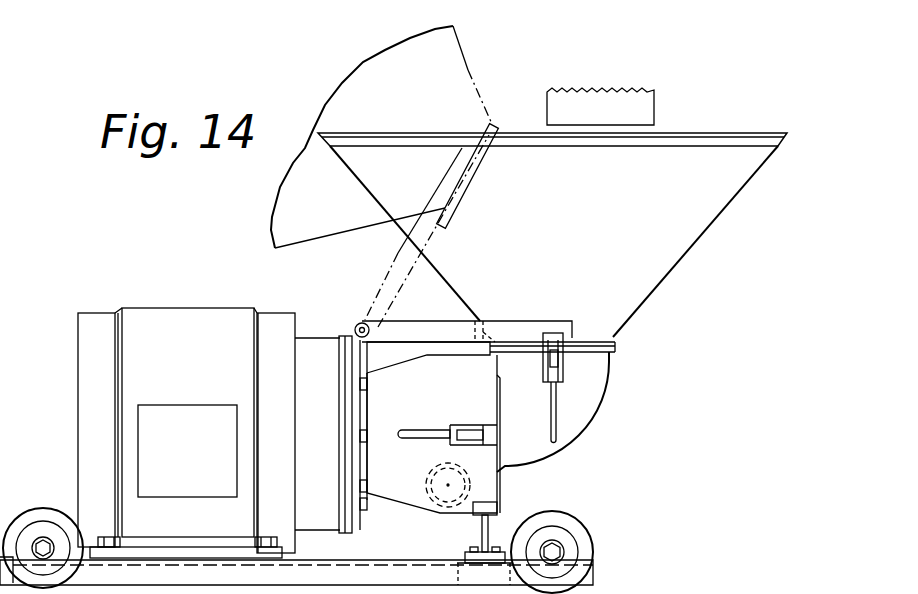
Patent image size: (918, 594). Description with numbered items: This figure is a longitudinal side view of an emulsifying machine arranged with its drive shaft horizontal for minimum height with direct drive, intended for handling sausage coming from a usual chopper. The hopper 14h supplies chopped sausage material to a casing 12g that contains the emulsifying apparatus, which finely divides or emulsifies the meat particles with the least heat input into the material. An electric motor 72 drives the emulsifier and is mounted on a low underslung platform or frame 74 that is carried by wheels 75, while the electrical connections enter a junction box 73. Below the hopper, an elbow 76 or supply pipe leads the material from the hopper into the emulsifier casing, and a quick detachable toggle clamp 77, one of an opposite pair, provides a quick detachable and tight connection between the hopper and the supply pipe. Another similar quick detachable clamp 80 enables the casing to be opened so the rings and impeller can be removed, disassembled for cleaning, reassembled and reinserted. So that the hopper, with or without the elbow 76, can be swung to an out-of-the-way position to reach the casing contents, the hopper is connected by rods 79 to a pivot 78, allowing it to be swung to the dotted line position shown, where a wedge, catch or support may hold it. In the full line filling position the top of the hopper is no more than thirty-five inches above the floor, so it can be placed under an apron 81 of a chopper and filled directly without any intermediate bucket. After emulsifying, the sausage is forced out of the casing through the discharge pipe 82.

The electric motor 72 is at (205, 325).
The junction box 73 is at (222, 461).
The platform or frame 74 is at (342, 578).
The wheels 75 is at (30, 520).
The elbow or supply pipe 76 is at (593, 390).
The quick detachable clamp 77 is at (553, 427).
The pivot 78 is at (358, 328).
The rods 79 is at (418, 333).
The quick detachable clamp 80 is at (415, 433).
The apron of a chopper 81 is at (643, 110).
The discharge pipe 82 is at (472, 490).
The casing 12g is at (478, 400).
The hopper 14h is at (578, 253).